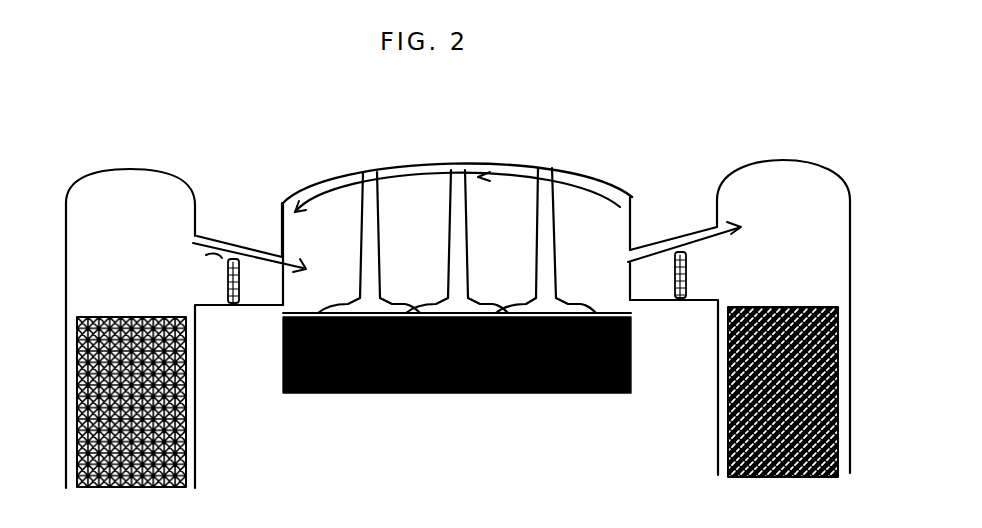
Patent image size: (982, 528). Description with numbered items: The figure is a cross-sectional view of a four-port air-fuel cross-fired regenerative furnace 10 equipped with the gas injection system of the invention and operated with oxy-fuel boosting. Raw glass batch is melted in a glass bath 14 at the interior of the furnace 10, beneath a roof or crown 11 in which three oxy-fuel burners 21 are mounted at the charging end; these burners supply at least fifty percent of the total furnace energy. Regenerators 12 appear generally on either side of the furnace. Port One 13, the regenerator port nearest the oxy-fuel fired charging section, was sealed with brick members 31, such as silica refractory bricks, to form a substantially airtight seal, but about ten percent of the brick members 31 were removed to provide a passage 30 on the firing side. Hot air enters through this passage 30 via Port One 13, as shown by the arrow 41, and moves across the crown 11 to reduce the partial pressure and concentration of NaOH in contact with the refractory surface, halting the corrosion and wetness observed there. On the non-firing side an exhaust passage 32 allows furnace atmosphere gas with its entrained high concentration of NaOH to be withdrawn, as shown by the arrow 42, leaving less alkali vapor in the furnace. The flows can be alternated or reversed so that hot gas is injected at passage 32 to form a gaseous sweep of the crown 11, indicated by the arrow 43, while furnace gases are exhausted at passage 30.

The cross-fired regenerative furnace 10 is at (742, 98).
The crown 11 is at (412, 166).
The regenerators 12 is at (851, 198).
The Port One 13 is at (205, 235).
The glass bath 14 is at (480, 393).
The oxy-fuel burners 21 is at (540, 205).
The passage 30 is at (222, 258).
The brick members 31 is at (231, 305).
The passage 32 is at (679, 247).
The arrow 41 is at (262, 253).
The arrow 42 is at (652, 244).
The arrow 43 is at (585, 182).